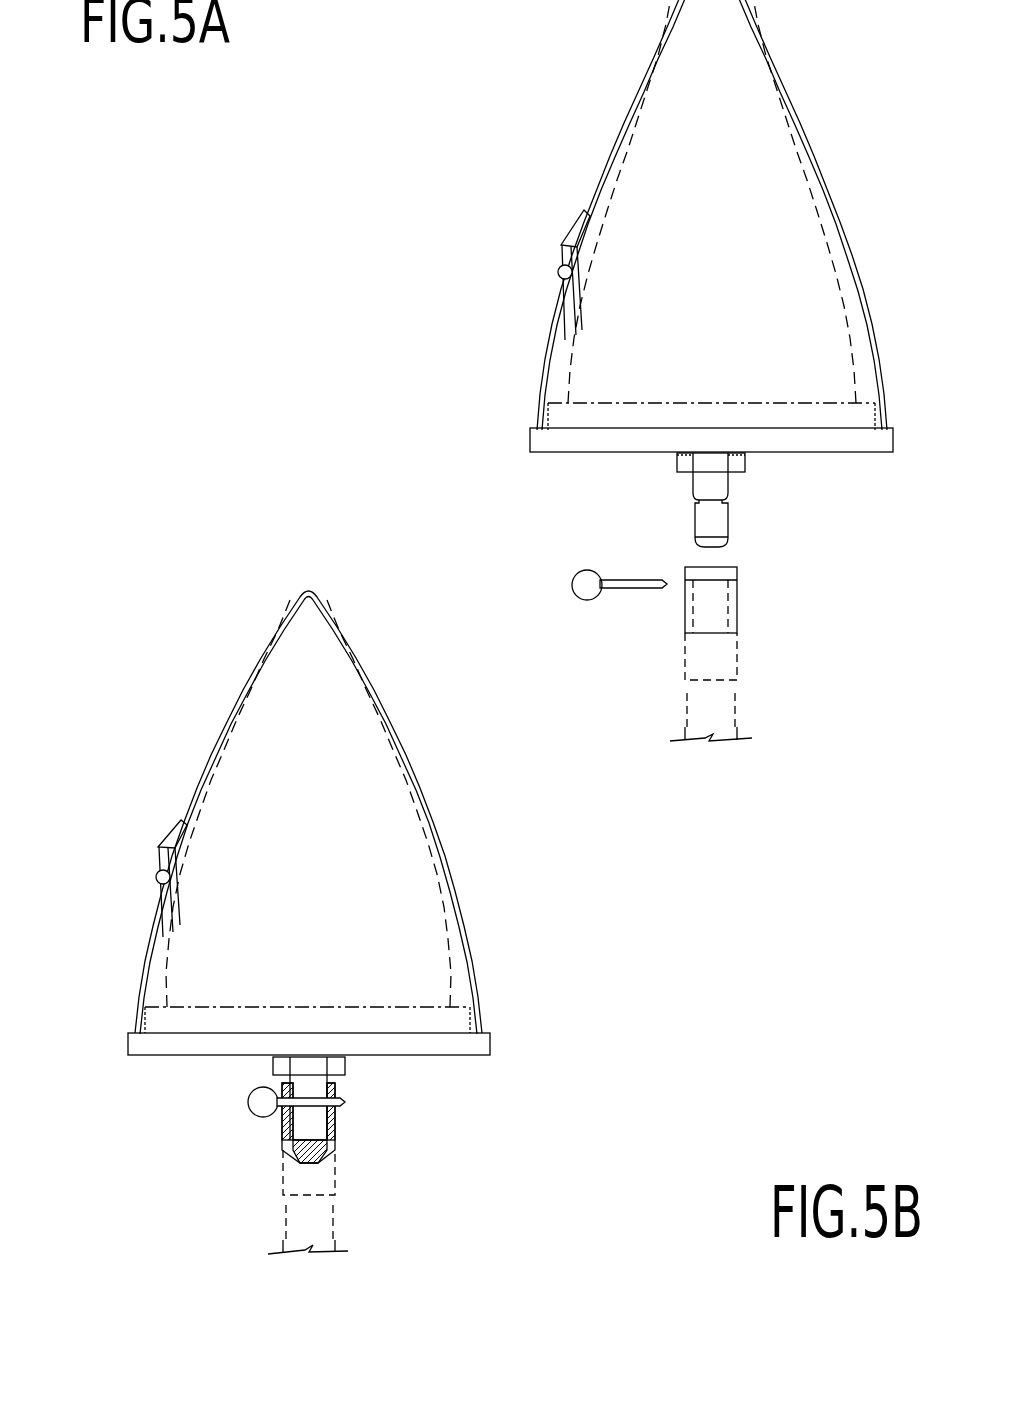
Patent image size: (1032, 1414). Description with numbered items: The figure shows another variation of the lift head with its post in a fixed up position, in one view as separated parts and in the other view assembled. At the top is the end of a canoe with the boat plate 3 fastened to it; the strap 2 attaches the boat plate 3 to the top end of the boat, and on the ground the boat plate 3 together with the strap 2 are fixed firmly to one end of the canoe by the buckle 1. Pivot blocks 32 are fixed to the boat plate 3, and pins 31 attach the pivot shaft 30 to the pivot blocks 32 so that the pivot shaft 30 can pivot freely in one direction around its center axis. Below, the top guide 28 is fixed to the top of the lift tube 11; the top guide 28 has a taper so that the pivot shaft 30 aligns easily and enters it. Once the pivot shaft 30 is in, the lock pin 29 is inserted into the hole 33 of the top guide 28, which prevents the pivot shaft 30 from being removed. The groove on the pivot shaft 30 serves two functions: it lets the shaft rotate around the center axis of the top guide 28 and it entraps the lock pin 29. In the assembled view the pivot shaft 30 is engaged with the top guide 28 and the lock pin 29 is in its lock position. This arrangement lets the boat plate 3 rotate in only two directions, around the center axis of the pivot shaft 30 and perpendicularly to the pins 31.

In FIG. 5A, the buckle 1 is at (560, 233).
In FIG. 5B, the buckle 1 is at (155, 835).
In FIG. 5A, the strap 2 is at (545, 352).
In FIG. 5B, the strap 2 is at (472, 940).
In FIG. 5A, the boat plate 3 is at (590, 452).
In FIG. 5B, the boat plate 3 is at (187, 1053).
In FIG. 5A, the lift tube 11 is at (685, 710).
In FIG. 5A, the top guide 28 is at (685, 617).
In FIG. 5A, the lock pin 29 is at (575, 598).
In FIG. 5A, the pivot shaft 30 is at (730, 520).
In FIG. 5B, the pivot shaft 30 is at (315, 1122).
In FIG. 5A, the pins 31 is at (745, 462).
In FIG. 5A, the pivot blocks 32 is at (733, 477).
In FIG. 5B, the pivot blocks 32 is at (345, 1075).
In FIG. 5A, the hole 33 is at (737, 587).